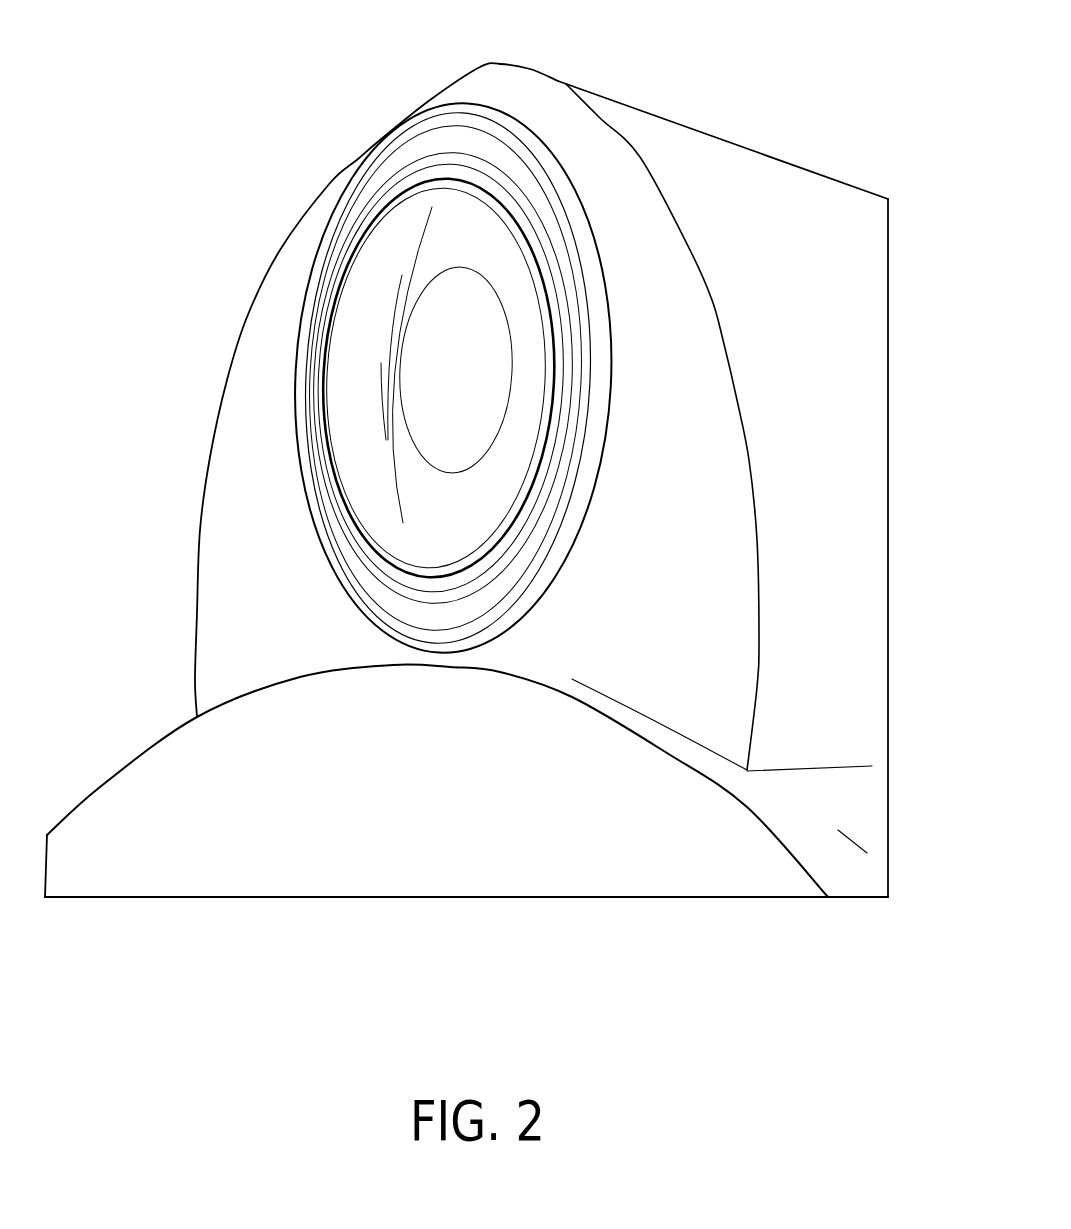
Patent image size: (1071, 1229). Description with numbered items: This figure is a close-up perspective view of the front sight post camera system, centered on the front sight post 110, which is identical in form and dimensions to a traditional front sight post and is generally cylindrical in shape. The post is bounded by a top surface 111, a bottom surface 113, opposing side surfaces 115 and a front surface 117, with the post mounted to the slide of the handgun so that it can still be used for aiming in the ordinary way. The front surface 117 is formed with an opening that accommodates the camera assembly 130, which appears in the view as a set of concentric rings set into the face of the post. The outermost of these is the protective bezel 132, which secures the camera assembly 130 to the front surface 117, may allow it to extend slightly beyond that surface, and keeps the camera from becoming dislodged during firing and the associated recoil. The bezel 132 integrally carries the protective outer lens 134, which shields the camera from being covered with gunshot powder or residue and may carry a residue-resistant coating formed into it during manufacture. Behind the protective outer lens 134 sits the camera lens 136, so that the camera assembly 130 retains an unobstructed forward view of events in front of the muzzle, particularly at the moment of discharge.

The front sight post 110 is at (632, 106).
The top surface 111 is at (743, 147).
The bottom surface 113 is at (840, 767).
The side surfaces 115 is at (853, 418).
The front surface 117 is at (238, 463).
The camera assembly 130 is at (358, 172).
The protective bezel 132 is at (410, 157).
The protective outer lens 134 is at (443, 188).
The camera lens 136 is at (483, 233).